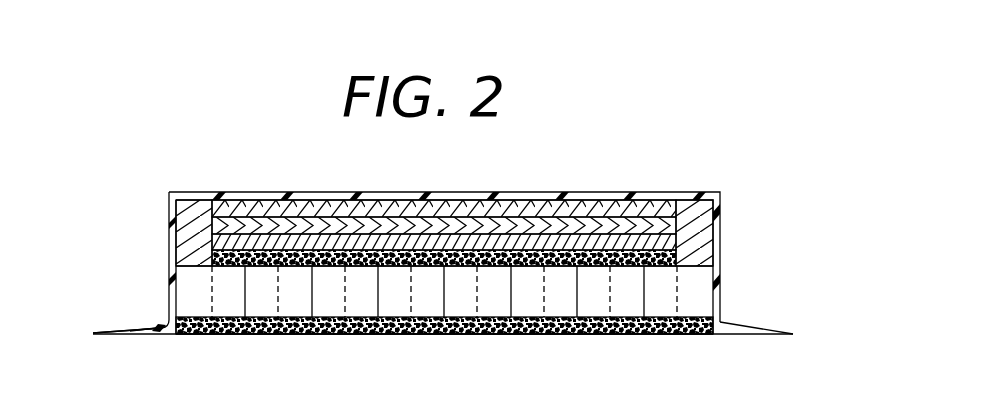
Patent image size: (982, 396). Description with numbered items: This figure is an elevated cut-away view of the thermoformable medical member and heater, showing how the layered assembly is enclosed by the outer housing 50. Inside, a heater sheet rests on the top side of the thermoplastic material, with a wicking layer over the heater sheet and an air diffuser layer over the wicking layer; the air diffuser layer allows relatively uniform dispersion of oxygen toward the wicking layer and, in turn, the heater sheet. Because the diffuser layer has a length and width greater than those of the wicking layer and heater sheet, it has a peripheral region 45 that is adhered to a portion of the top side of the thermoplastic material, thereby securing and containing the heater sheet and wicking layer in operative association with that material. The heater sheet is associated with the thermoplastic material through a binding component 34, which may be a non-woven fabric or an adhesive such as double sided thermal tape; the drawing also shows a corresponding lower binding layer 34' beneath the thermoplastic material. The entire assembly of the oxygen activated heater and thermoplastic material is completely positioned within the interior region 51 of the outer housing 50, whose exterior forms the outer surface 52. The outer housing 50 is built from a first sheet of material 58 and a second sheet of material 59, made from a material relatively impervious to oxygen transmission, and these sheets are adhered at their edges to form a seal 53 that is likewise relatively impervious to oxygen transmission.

The outer housing 50 is at (88, 325).
The outer surface 52 is at (718, 213).
The seal 53 is at (100, 334).
The first sheet of material 58 is at (133, 328).
The second sheet of material 59 is at (150, 335).
The interior region 51 is at (730, 335).
The binding component 34 is at (502, 248).
The lower electrode layer 34' is at (444, 356).
The peripheral region 45 is at (172, 280).